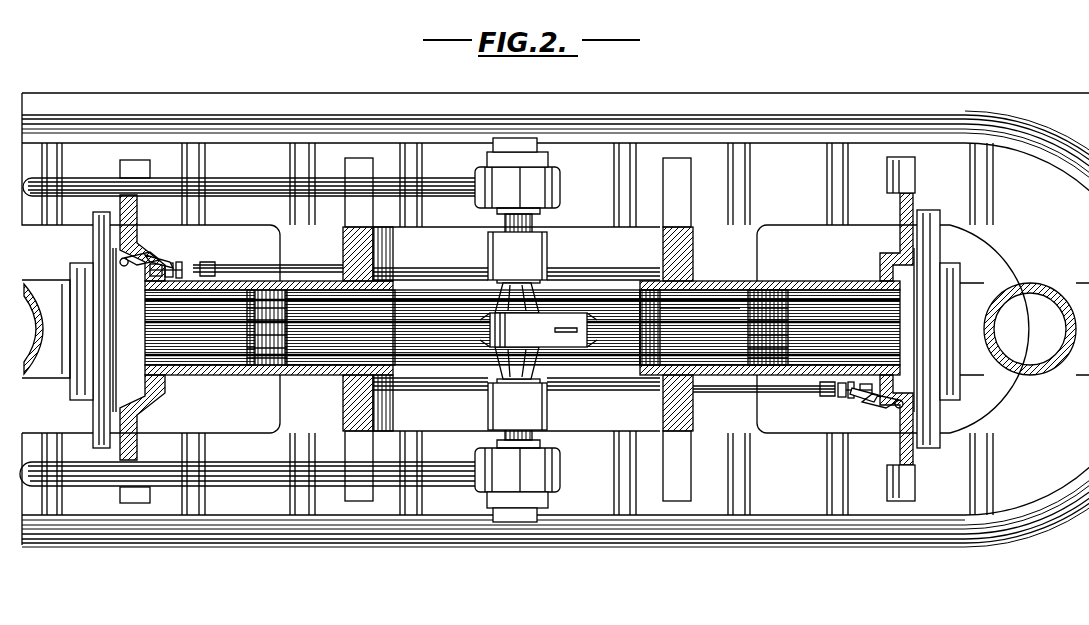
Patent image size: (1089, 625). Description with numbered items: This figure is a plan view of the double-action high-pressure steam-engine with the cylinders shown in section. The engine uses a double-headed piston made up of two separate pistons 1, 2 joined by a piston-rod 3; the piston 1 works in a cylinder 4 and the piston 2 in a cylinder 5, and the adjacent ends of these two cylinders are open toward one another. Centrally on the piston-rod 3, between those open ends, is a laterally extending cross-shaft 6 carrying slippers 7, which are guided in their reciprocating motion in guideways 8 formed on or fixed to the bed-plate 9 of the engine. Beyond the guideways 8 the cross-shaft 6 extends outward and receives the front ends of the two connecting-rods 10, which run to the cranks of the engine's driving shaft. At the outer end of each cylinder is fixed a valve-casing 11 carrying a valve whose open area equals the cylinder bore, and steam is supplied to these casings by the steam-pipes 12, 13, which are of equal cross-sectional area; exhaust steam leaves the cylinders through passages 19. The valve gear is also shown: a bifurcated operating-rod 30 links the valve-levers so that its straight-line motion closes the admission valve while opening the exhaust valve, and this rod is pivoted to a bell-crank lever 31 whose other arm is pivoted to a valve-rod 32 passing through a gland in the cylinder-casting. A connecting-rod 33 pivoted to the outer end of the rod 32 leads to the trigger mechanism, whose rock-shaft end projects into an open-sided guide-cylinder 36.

The piston 1 is at (262, 362).
The piston 2 is at (776, 300).
The piston-rod 3 is at (304, 355).
The cylinder 4 is at (177, 356).
The cylinder 5 is at (820, 305).
The cross-shaft 6 is at (508, 250).
The slippers 7 is at (543, 242).
The guideways 8 is at (598, 250).
The bed-plate 9 is at (517, 329).
The connecting-rods 10 is at (263, 178).
The valve-casing 11 is at (98, 242).
The steam-pipe 12 is at (1030, 329).
The steam-pipe 13 is at (47, 370).
The exhaust passages 19 is at (148, 392).
The operating-rod 30 is at (150, 256).
The bell-crank lever 31 is at (511, 333).
The valve-rod 32 is at (193, 270).
The connecting-rod 33 is at (316, 270).
The guide-cylinder 36 is at (447, 256).